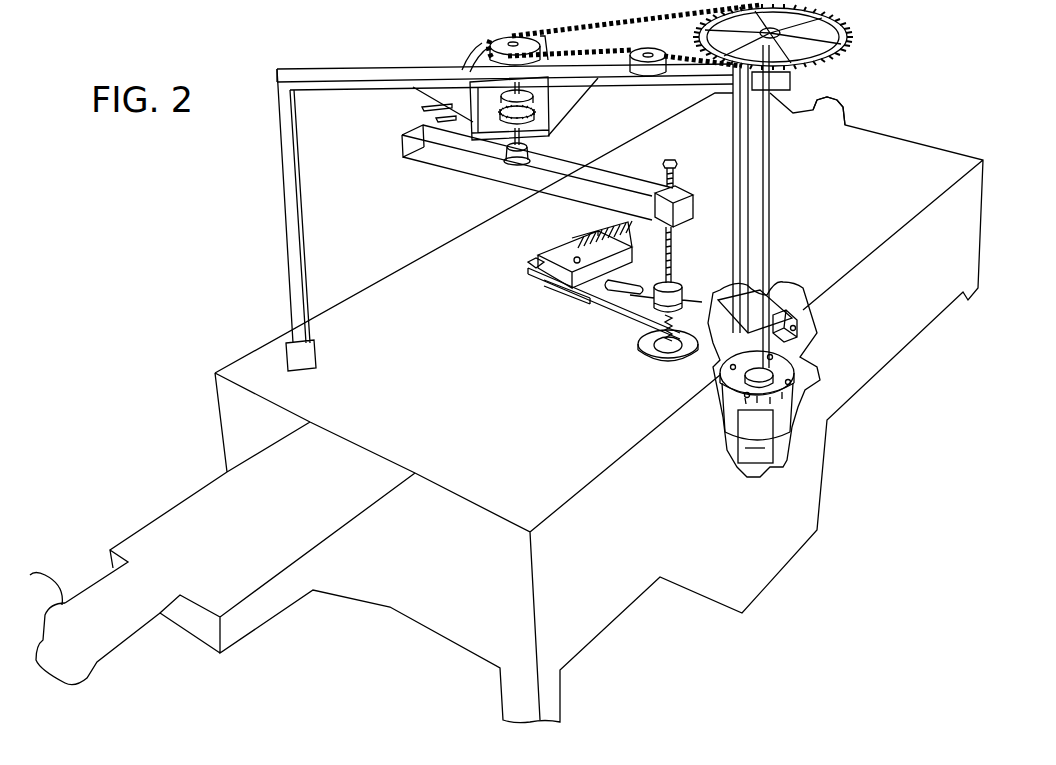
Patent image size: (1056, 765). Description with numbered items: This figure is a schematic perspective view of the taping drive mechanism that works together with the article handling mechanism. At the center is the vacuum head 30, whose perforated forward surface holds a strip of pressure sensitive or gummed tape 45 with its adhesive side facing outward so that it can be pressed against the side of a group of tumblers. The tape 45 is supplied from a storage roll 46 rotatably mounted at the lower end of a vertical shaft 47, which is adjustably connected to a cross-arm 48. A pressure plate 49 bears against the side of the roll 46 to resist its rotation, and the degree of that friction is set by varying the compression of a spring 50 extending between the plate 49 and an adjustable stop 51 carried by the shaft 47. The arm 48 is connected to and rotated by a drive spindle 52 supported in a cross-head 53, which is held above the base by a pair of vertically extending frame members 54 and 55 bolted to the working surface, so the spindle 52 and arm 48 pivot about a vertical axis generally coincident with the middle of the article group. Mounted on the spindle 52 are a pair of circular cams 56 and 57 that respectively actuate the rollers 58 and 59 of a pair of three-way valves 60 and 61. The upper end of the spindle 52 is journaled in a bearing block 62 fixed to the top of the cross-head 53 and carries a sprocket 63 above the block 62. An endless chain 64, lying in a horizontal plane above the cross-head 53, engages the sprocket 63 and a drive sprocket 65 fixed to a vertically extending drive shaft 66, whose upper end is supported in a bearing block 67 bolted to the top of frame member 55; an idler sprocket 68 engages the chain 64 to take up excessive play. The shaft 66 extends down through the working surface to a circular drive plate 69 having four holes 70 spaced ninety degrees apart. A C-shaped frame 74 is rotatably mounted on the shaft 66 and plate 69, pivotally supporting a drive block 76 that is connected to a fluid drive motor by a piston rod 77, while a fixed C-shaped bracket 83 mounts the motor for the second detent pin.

The head 30 is at (567, 252).
The tape 45 is at (617, 308).
The storage roll 46 is at (678, 363).
The vertical shaft 47 is at (673, 263).
The cross-arm 48 is at (547, 176).
The pressure plate 49 is at (660, 352).
The spring 50 is at (655, 340).
The adjustable stop 51 is at (676, 313).
The drive spindle 52 is at (512, 87).
The cross-head 53 is at (316, 73).
The frame member 54 is at (296, 205).
The frame member 55 is at (735, 197).
The circular cam 56 is at (558, 103).
The circular cam 57 is at (532, 150).
The roller 58 is at (538, 97).
The roller 59 is at (553, 116).
The three-way valve 60 is at (493, 97).
The three-way valve 61 is at (480, 128).
The bearing block 62 is at (543, 38).
The sprocket 63 is at (522, 43).
The endless chain 64 is at (618, 26).
The drive sprocket 65 is at (845, 36).
The drive shaft 66 is at (770, 185).
The bearing block 67 is at (816, 98).
The idler sprocket 68 is at (652, 78).
The circular drive plate 69 is at (793, 416).
The holes 70 is at (790, 381).
The C-shaped frame 74 is at (796, 389).
The drive block 76 is at (799, 316).
The piston rod 77 is at (770, 296).
The C-shaped bracket 83 is at (755, 436).